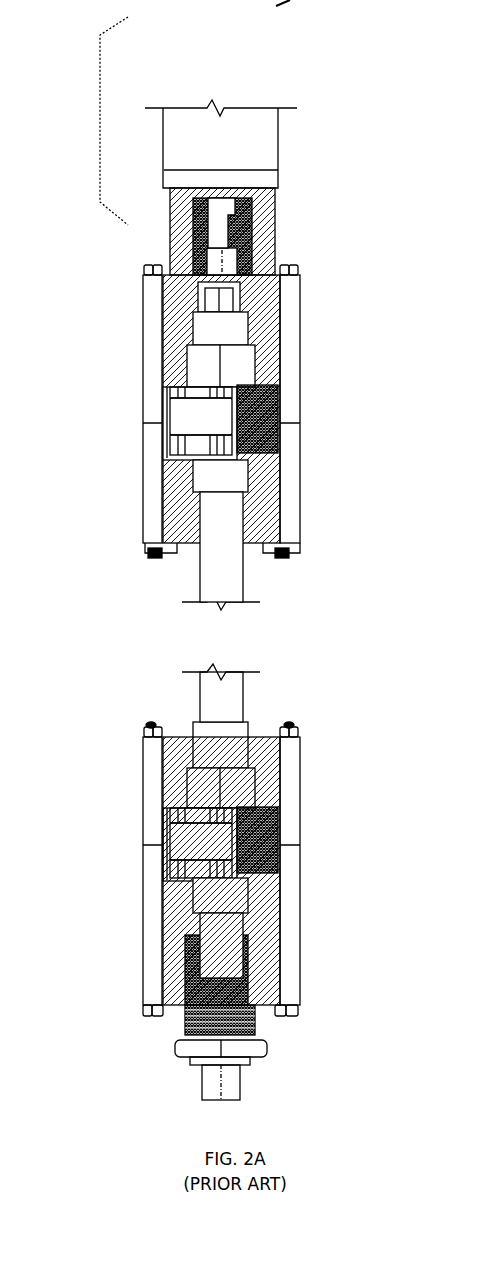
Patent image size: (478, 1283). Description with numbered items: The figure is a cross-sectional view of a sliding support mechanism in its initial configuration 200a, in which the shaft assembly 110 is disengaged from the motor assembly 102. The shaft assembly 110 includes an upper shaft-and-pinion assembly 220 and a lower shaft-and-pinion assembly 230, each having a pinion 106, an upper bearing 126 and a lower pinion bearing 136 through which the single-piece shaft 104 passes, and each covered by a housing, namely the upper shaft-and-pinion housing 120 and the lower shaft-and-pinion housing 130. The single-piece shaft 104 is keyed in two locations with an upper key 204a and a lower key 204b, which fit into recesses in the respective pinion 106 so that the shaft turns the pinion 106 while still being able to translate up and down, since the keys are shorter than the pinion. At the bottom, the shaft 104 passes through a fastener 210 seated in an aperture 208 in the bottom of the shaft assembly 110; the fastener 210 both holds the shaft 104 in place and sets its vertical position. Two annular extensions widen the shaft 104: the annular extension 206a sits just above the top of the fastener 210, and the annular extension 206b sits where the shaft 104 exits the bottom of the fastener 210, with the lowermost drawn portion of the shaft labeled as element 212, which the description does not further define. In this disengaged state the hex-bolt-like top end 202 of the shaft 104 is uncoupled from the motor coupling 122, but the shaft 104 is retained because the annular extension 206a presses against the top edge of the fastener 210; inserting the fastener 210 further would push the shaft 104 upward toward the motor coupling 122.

The motor assembly 102 is at (99, 121).
The configuration 200a is at (332, 143).
The motor coupling 122 is at (257, 228).
The upper shaft-and-pinion housing 120 is at (278, 243).
The upper shaft-and-pinion assembly 220 is at (118, 320).
The top end 202 is at (240, 295).
The upper bearing 126 is at (239, 343).
The pinion 106 is at (218, 430).
The upper key 204a is at (245, 445).
The lower pinion bearing 136 is at (239, 491).
The lower shaft-and-pinion housing 130 is at (268, 494).
The single-piece shaft 104 is at (240, 571).
The shaft assembly 110 is at (156, 646).
The lower shaft-and-pinion assembly 230 is at (114, 843).
The lower key 204b is at (245, 843).
The annular extension 206a is at (250, 927).
The aperture 208 is at (174, 1020).
The annular extension 206b is at (250, 1065).
The lower shaft 212 is at (240, 1098).
The fastener 210 is at (176, 1053).